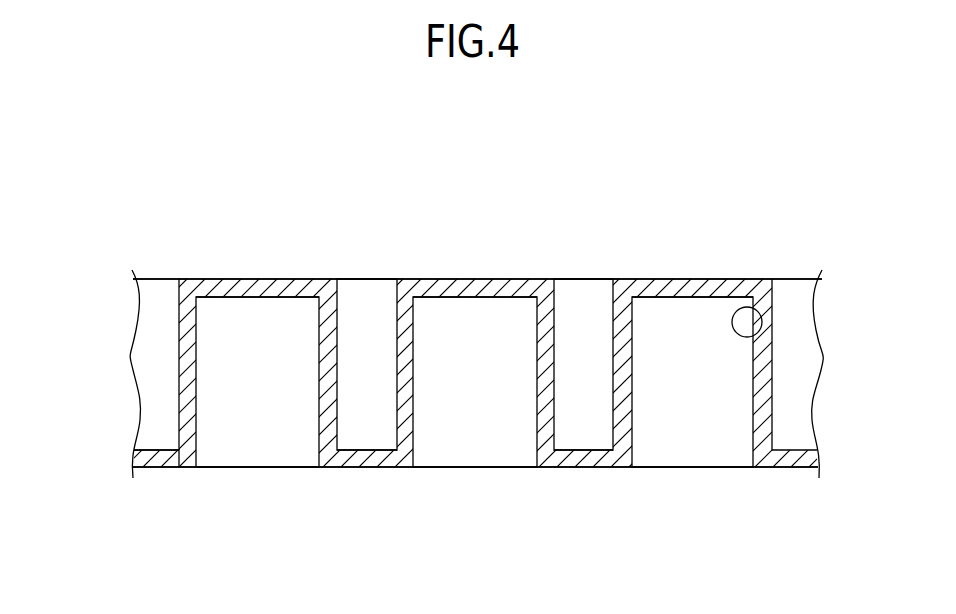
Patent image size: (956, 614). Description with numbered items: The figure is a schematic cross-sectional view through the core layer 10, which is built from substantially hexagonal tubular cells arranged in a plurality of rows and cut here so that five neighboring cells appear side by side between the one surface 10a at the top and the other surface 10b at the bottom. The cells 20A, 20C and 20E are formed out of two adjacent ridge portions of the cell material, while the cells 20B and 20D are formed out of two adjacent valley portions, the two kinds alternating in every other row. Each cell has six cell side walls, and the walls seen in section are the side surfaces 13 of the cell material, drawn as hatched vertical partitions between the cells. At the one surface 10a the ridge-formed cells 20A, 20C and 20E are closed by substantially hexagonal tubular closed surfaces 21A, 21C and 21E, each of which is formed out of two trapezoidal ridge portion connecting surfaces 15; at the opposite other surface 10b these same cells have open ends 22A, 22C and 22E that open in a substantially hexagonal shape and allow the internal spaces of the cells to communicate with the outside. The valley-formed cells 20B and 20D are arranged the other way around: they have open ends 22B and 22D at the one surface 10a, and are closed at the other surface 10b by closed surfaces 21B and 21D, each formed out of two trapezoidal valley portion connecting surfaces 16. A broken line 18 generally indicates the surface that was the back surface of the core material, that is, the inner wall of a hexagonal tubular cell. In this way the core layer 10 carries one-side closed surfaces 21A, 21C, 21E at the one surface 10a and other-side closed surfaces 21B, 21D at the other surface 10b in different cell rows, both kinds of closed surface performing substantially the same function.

The core layer 10 is at (808, 228).
The one surface 10a is at (800, 279).
The other surface 10b is at (786, 467).
The side surface 13 is at (772, 366).
The ridge portion connecting surface 15 is at (208, 279).
The valley portion connecting surface 16 is at (157, 467).
The broken line 18 is at (755, 309).
The cell 20A is at (237, 372).
The cell 20B is at (365, 310).
The cell 20C is at (480, 322).
The cell 20D is at (587, 312).
The cell 20E is at (700, 318).
The closed surface 21A is at (253, 279).
The closed surface 21B is at (362, 467).
The closed surface 21C is at (475, 279).
The closed surface 21D is at (580, 467).
The closed surface 21E is at (693, 279).
The open end 22A is at (260, 467).
The open end 22B is at (372, 279).
The open end 22C is at (472, 467).
The open end 22D is at (583, 279).
The open end 22E is at (697, 467).